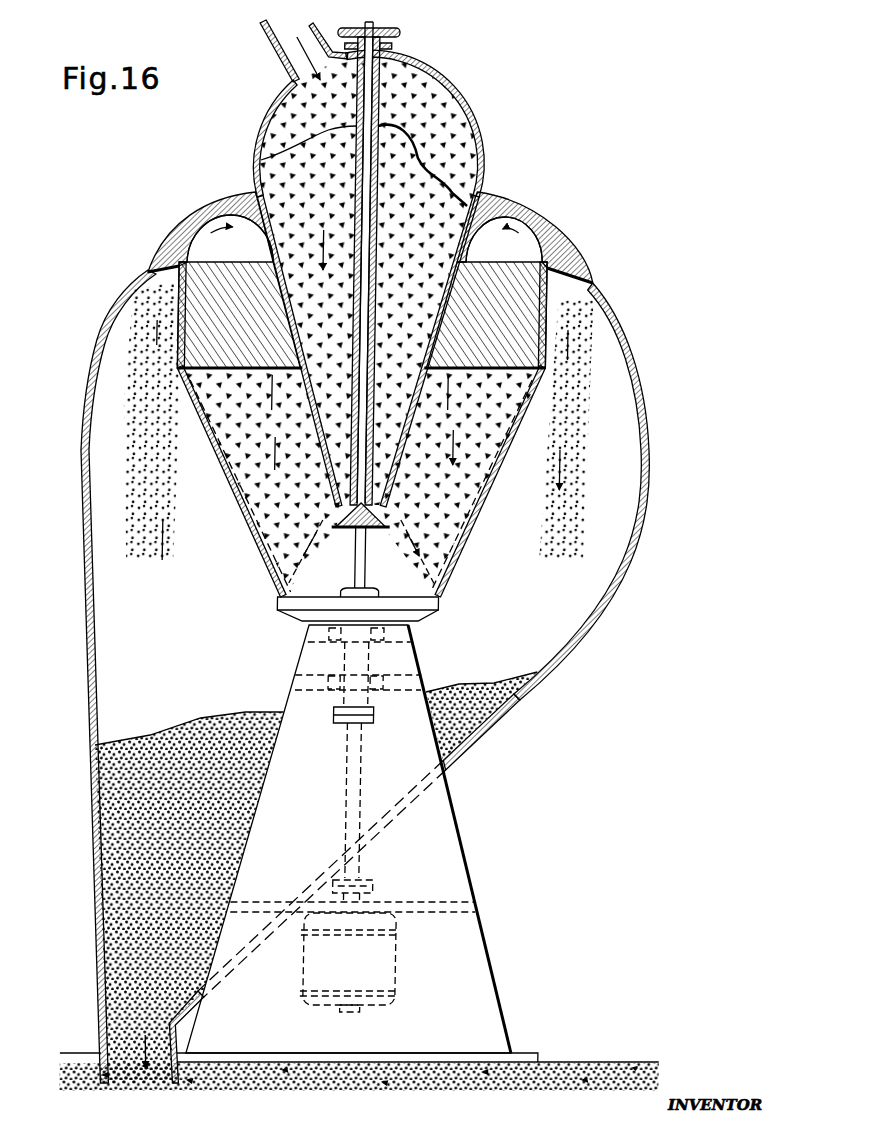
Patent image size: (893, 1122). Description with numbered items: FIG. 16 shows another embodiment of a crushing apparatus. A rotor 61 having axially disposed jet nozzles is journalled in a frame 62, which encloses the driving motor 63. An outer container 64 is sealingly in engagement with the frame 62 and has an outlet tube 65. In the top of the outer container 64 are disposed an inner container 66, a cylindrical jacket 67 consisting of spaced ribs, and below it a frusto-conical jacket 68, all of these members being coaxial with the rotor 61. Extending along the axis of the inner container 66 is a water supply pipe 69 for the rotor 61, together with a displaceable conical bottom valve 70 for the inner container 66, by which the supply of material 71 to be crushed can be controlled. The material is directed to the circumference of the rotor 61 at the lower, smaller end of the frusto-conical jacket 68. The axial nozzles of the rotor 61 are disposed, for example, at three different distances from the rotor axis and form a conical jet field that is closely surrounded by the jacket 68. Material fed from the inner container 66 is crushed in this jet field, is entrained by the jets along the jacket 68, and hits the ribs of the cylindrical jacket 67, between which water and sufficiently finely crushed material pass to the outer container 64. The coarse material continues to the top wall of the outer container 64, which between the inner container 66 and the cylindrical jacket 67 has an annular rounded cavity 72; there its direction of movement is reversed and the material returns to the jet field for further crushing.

The rotor 61 is at (449, 609).
The frame 62 is at (446, 844).
The driving motor 63 is at (399, 960).
The outer container 64 is at (602, 635).
The outlet tube 65 is at (149, 1035).
The inner container 66 is at (262, 140).
The cylindrical jacket 67 is at (554, 312).
The frusto-conical jacket 68 is at (489, 520).
The water supply pipe 69 is at (372, 98).
The conical bottom valve 70 is at (343, 527).
The material 71 is at (410, 258).
The annular rounded cavity 72 is at (531, 222).